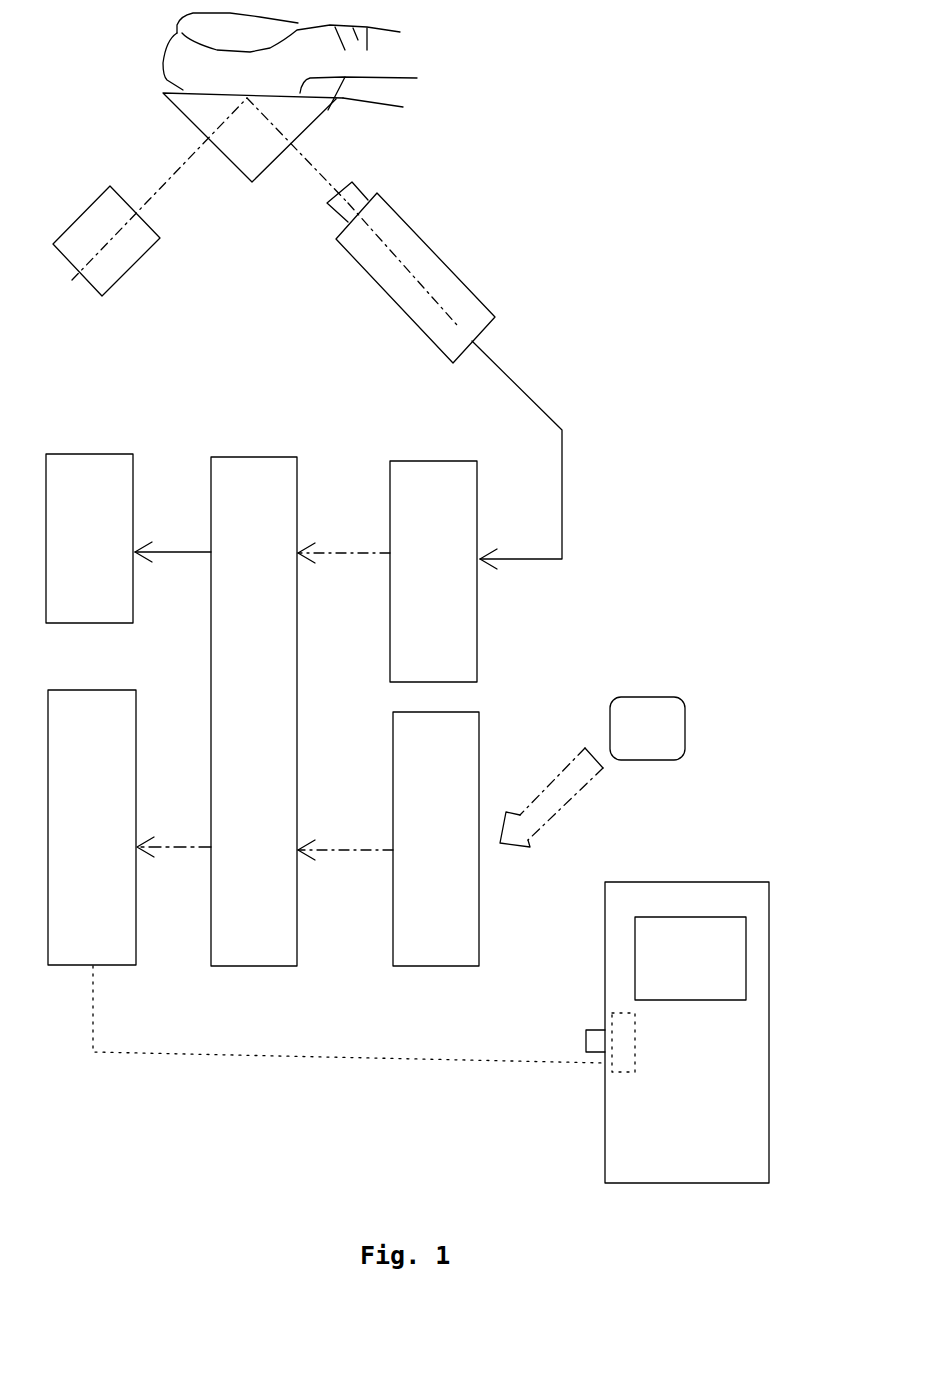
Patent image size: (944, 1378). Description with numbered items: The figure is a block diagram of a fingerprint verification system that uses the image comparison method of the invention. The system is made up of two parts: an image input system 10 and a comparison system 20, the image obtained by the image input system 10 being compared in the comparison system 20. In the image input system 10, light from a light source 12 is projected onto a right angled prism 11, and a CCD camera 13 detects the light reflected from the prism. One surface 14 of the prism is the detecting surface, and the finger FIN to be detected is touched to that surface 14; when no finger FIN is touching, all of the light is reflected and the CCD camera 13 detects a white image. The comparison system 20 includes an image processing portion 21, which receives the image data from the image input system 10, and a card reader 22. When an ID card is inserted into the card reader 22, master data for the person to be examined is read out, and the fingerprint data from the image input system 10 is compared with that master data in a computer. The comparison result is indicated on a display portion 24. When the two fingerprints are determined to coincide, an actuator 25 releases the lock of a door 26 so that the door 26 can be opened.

The finger FIN is at (360, 25).
The image input system 10 is at (457, 168).
The right angled prism 11 is at (333, 118).
The light source 12 is at (140, 255).
The CCD camera 13 is at (468, 287).
The surface 14 is at (417, 78).
The comparison system 20 is at (537, 383).
The image processing portion 21 is at (423, 460).
The card reader 22 is at (480, 712).
The display portion 24 is at (87, 450).
The actuator 25 is at (92, 685).
The door 26 is at (673, 880).